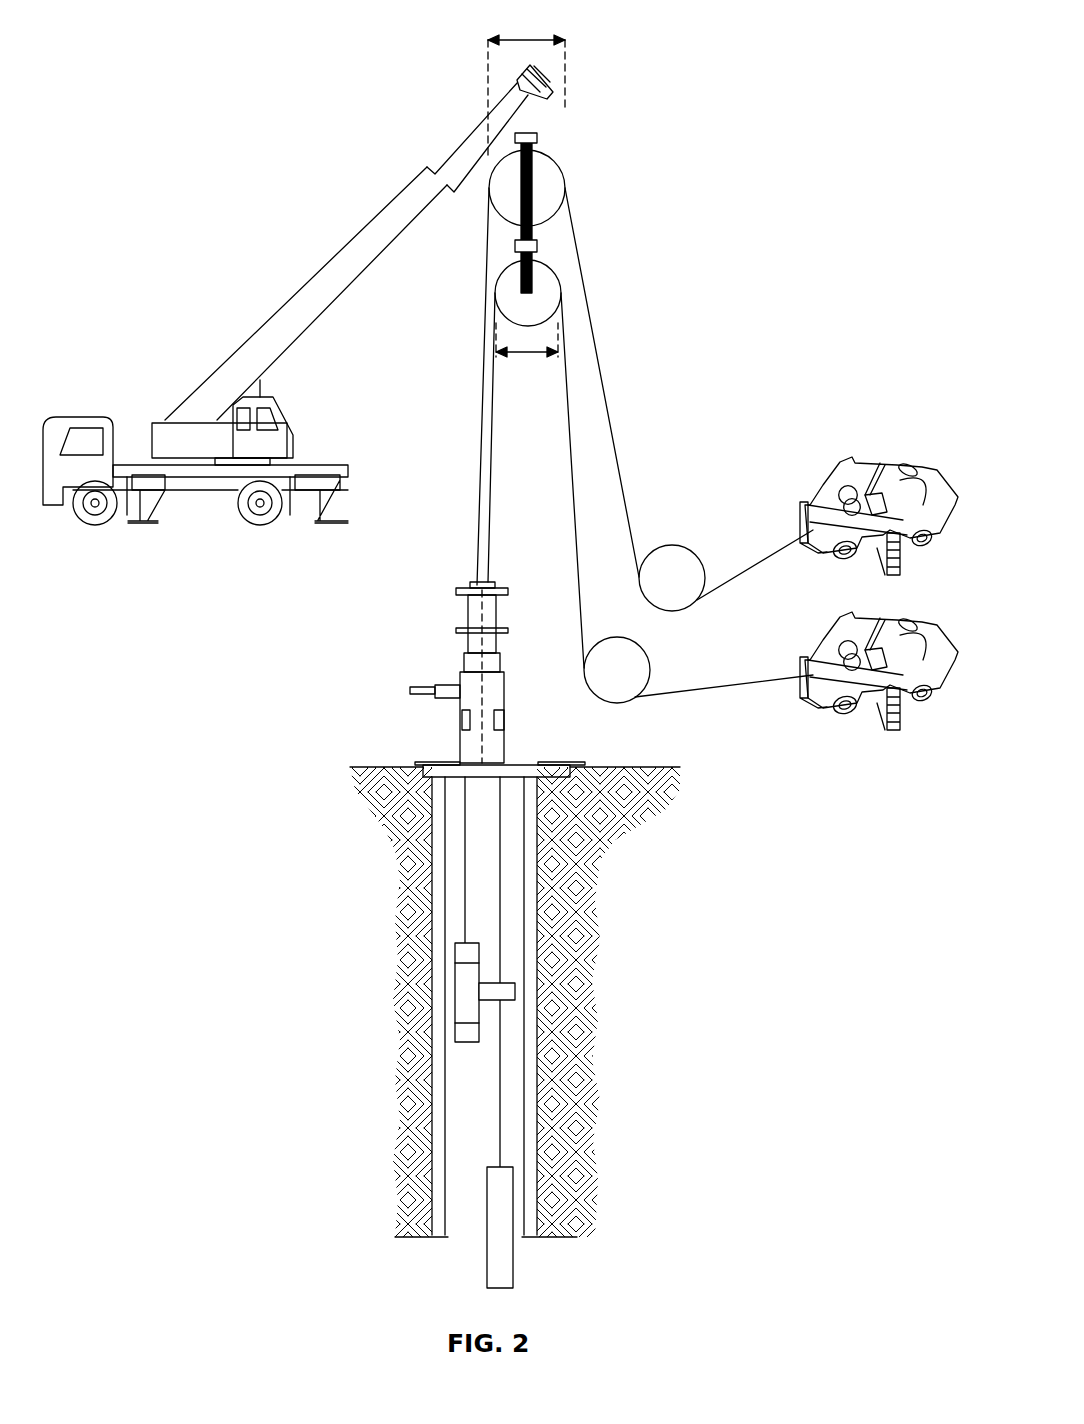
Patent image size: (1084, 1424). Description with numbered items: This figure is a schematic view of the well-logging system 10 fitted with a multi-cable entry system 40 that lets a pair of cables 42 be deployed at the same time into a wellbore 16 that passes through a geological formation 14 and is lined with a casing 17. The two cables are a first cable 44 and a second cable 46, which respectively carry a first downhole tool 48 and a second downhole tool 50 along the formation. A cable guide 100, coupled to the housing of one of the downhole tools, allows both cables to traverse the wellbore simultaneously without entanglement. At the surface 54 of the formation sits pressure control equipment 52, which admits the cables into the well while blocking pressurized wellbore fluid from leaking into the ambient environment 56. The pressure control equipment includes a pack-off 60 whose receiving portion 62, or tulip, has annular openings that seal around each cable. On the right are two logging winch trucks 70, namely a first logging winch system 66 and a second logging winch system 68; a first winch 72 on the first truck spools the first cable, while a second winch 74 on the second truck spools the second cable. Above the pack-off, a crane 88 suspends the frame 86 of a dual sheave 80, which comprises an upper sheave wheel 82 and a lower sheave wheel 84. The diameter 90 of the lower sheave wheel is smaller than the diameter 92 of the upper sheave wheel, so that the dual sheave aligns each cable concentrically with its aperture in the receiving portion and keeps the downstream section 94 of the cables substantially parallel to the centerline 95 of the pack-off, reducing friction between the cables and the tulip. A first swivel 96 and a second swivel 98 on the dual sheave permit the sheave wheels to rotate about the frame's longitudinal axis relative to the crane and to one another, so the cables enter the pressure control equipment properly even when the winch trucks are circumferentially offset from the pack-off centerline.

The well-logging system 10 is at (115, 82).
The geological formation 14 is at (582, 853).
The wellbore 16 is at (426, 834).
The casing 17 is at (440, 913).
The multi-cable entry system 40 is at (690, 122).
The pair of cables 42 is at (672, 410).
The first cable 44 is at (575, 518).
The second cable 46 is at (620, 465).
The first downhole tool 48 is at (508, 1272).
The second downhole tool 50 is at (472, 948).
The pressure control equipment 52 is at (382, 658).
The surface 54 is at (543, 762).
The ambient environment 56 is at (353, 409).
The pack-off 60 is at (466, 615).
The receiving portion 62 is at (494, 584).
The first logging winch system 66 is at (930, 632).
The second logging winch system 68 is at (930, 470).
The logging winch trucks 70 is at (869, 398).
The first winch 72 is at (850, 648).
The second winch 74 is at (852, 498).
The dual sheave 80 is at (577, 170).
The upper sheave wheel 82 is at (560, 188).
The lower sheave wheel 84 is at (545, 305).
The frame 86 is at (497, 178).
The crane 88 is at (345, 250).
The diameter of the lower sheave wheel 90 is at (535, 355).
The diameter of the upper sheave wheel 92 is at (528, 38).
The downstream section 94 is at (460, 316).
The centerline 95 is at (482, 695).
The first swivel 96 is at (540, 137).
The second swivel 98 is at (540, 250).
The cable guide 100 is at (458, 1000).